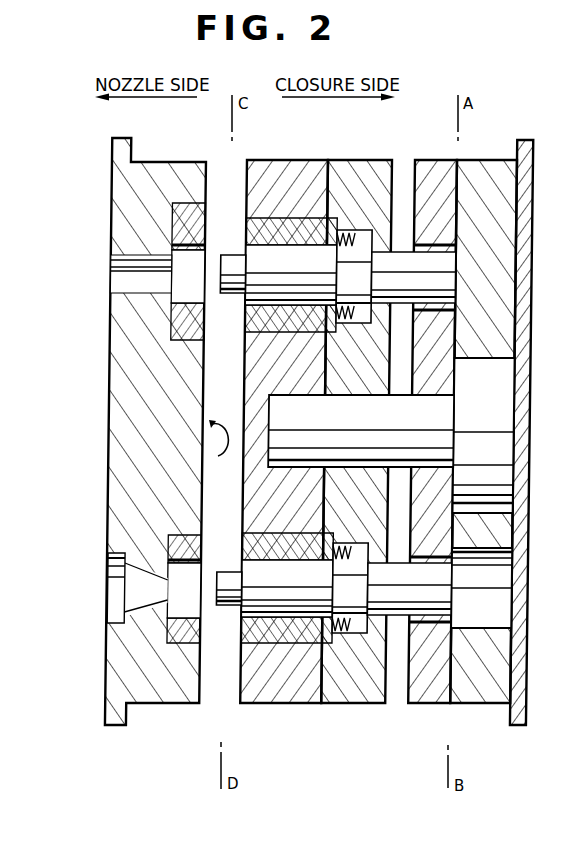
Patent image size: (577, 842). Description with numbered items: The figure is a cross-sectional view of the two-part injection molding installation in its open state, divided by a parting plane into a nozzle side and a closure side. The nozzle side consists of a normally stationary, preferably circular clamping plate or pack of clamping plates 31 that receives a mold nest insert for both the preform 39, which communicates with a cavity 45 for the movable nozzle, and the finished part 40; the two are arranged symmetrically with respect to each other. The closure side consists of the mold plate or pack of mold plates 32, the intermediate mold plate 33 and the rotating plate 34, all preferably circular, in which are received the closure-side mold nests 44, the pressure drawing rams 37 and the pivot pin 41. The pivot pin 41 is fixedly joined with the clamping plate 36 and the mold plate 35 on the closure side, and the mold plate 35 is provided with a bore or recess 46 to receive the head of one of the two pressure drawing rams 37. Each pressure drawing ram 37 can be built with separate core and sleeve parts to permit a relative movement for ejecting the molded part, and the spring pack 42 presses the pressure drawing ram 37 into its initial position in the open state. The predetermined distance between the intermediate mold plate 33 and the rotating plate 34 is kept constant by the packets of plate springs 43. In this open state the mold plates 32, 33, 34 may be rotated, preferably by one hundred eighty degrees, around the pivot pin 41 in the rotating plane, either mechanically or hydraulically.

The clamping plate 31 is at (167, 695).
The mold plate 32 is at (273, 698).
The intermediate mold plate 33 is at (352, 697).
The rotating plate 34 is at (425, 698).
The mold plate 35 is at (485, 700).
The clamping plate 36 is at (522, 730).
The pressure drawing ram 37 is at (227, 253).
The preform 39 is at (205, 545).
The finished part 40 is at (172, 343).
The pivot pin 41 is at (500, 416).
The spring pack 42 is at (337, 228).
The packets of plate springs 43 is at (400, 200).
The mold nests 44 is at (260, 220).
The cavity for the movable nozzle 45 is at (132, 592).
The bore or recess 46 is at (497, 610).